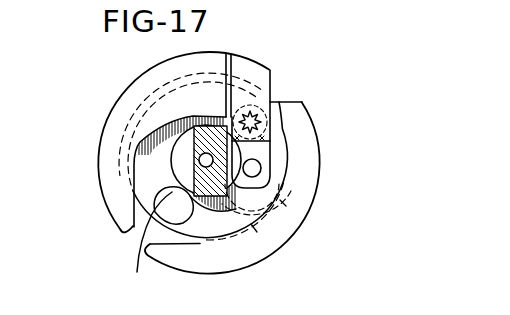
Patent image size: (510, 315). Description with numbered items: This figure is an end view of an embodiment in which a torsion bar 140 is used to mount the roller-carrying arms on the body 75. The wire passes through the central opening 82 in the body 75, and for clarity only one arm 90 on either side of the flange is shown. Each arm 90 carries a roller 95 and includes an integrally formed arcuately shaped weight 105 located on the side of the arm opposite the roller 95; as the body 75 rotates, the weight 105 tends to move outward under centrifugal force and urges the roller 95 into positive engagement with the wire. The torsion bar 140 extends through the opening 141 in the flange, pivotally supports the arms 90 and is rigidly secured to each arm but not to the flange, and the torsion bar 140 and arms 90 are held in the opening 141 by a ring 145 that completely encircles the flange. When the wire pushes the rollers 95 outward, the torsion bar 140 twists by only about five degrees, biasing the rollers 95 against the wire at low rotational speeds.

The body 75 is at (206, 196).
The central opening 82 is at (200, 159).
The arm 90 is at (319, 179).
The roller 95 is at (292, 206).
The weight 105 is at (107, 177).
The torsion bar 140 is at (251, 116).
The opening 141 is at (186, 188).
The ring 145 is at (289, 135).